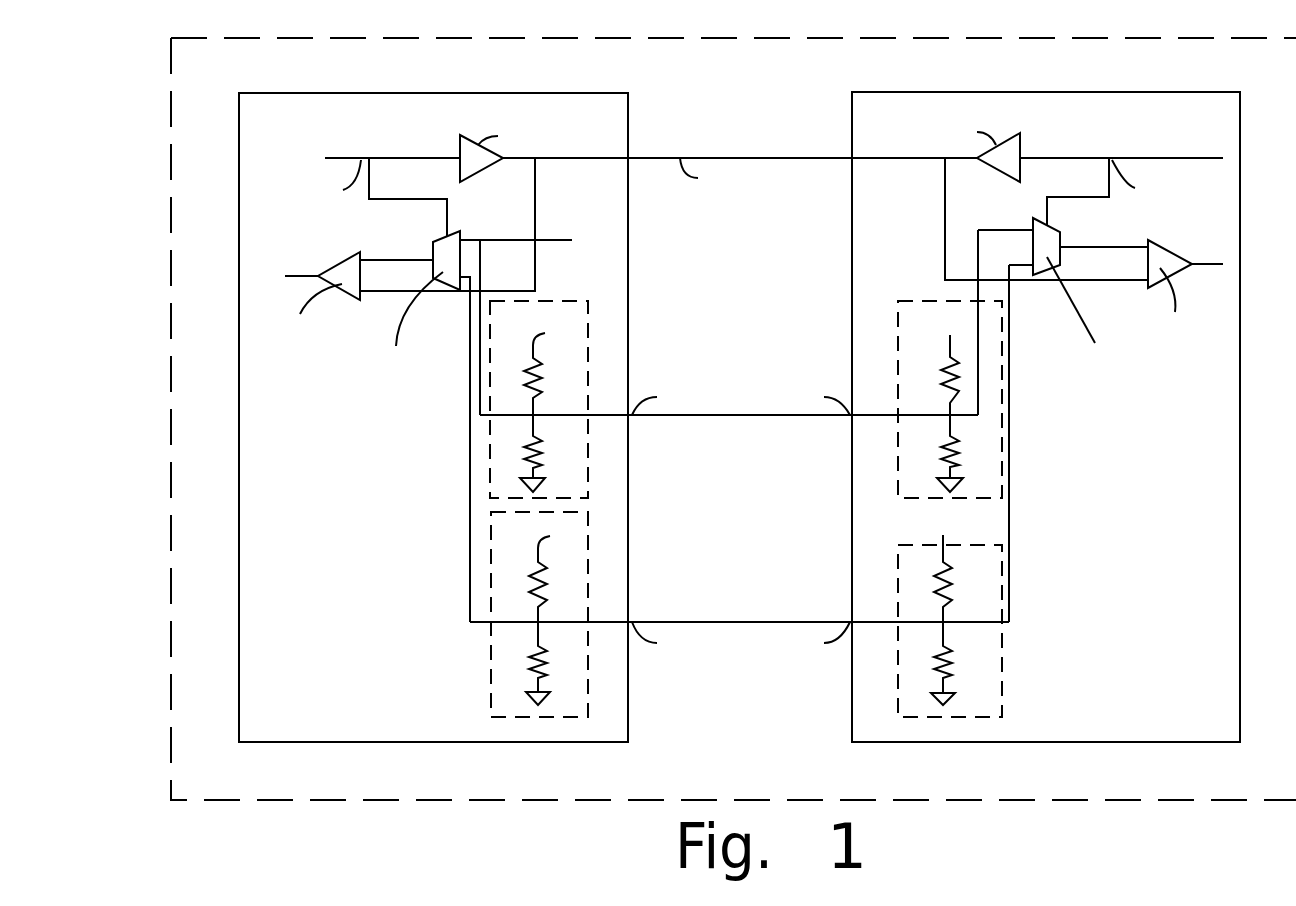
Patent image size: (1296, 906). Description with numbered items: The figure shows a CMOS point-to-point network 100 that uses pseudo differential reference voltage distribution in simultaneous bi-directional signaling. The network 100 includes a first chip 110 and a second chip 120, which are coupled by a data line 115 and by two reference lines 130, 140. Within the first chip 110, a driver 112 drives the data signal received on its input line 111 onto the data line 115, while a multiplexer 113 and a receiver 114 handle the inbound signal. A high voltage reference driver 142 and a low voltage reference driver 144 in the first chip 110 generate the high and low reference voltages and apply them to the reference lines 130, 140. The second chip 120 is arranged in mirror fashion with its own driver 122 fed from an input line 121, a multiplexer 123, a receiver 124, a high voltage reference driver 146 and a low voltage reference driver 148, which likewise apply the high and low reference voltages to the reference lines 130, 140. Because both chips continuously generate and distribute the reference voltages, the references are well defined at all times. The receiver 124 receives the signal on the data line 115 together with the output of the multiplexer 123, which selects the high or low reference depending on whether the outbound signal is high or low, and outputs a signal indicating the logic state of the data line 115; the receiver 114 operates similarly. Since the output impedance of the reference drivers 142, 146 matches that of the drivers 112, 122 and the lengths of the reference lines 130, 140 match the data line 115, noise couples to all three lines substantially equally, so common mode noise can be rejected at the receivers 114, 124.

The CMOS network 100 is at (170, 672).
The chip 110 is at (473, 93).
The input line 111 is at (340, 157).
The driver 112 is at (460, 143).
The multiplexer 113 is at (433, 246).
The receiver 114 is at (345, 265).
The data line 115 is at (650, 157).
The chip 120 is at (1040, 92).
The input line 121 is at (1130, 157).
The driver 122 is at (1022, 143).
The multiplexer 123 is at (1062, 236).
The receiver 124 is at (1170, 248).
The reference line 130 is at (710, 417).
The reference line 140 is at (710, 620).
The high voltage reference driver 142 is at (548, 300).
The low voltage reference driver 144 is at (490, 663).
The high voltage reference driver 146 is at (930, 298).
The low voltage reference driver 148 is at (1003, 655).